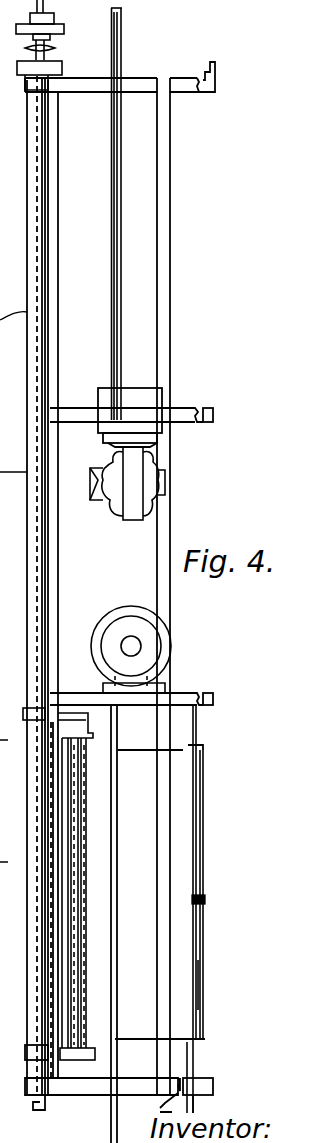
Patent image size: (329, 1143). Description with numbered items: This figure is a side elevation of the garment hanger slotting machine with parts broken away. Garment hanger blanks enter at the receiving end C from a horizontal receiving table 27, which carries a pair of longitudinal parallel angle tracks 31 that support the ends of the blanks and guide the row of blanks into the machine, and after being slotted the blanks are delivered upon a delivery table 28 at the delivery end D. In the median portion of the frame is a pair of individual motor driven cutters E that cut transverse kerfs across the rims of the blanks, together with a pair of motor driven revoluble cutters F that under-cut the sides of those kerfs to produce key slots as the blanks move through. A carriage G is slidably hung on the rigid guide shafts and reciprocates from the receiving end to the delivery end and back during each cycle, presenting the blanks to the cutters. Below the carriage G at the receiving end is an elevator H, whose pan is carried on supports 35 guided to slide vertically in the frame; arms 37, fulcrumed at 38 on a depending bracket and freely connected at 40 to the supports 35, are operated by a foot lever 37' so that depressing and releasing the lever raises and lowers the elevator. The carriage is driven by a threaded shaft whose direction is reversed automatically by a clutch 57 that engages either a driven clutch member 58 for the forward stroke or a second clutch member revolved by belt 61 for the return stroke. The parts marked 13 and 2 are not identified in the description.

The upper pulley 58 is at (64, 28).
The pinion 57 is at (56, 48).
The lower pulley 61 is at (62, 68).
The rod 28 is at (119, 40).
The frame section D is at (93, 93).
The knob F is at (121, 489).
The wheel E is at (107, 614).
The bracket 13 is at (23, 714).
The cross bar 35 is at (143, 752).
The shaft H is at (118, 848).
The column G is at (88, 876).
The rod 31 is at (115, 931).
The clamp 37 is at (232, 898).
The tube 40 is at (203, 940).
The rod 38 is at (200, 988).
The clamp 37' is at (226, 1094).
The base plate C is at (80, 1082).
The rod 27 is at (110, 1140).
The frame 2 is at (40, 1105).